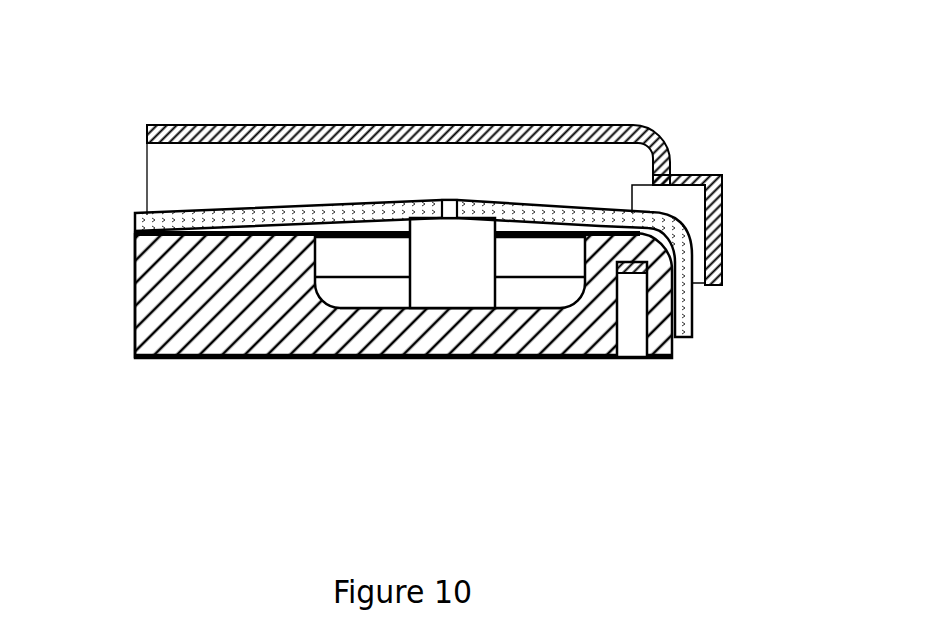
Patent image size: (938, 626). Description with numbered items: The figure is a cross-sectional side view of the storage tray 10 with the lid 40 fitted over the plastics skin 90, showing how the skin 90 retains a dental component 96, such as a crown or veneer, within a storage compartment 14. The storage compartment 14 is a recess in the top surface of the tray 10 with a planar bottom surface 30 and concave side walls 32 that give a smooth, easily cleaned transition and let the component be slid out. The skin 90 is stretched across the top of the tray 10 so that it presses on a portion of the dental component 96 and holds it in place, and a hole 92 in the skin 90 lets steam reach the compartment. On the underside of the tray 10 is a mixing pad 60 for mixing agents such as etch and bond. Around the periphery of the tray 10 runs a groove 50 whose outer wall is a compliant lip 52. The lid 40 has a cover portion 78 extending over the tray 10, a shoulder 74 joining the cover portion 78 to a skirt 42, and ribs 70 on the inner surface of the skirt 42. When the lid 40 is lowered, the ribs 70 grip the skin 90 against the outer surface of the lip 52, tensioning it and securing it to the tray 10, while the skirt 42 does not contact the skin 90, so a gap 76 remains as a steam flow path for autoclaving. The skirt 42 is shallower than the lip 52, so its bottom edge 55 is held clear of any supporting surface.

The storage tray 10 is at (137, 334).
The storage compartment 14 is at (541, 241).
The planar bottom surface 30 is at (387, 305).
The concave side wall 32 is at (317, 300).
The lid 40 is at (373, 108).
The skirt 42 is at (722, 265).
The groove 50 is at (632, 337).
The compliant lip 52 is at (672, 345).
The bottom edge 55 is at (722, 285).
The mixing pad 60 is at (175, 355).
The rib 70 is at (698, 250).
The shoulder 74 is at (660, 200).
The gap 76 is at (703, 200).
The cover portion 78 is at (265, 143).
The skin 90 is at (197, 218).
The hole 92 is at (452, 200).
The dental component 96 is at (457, 280).